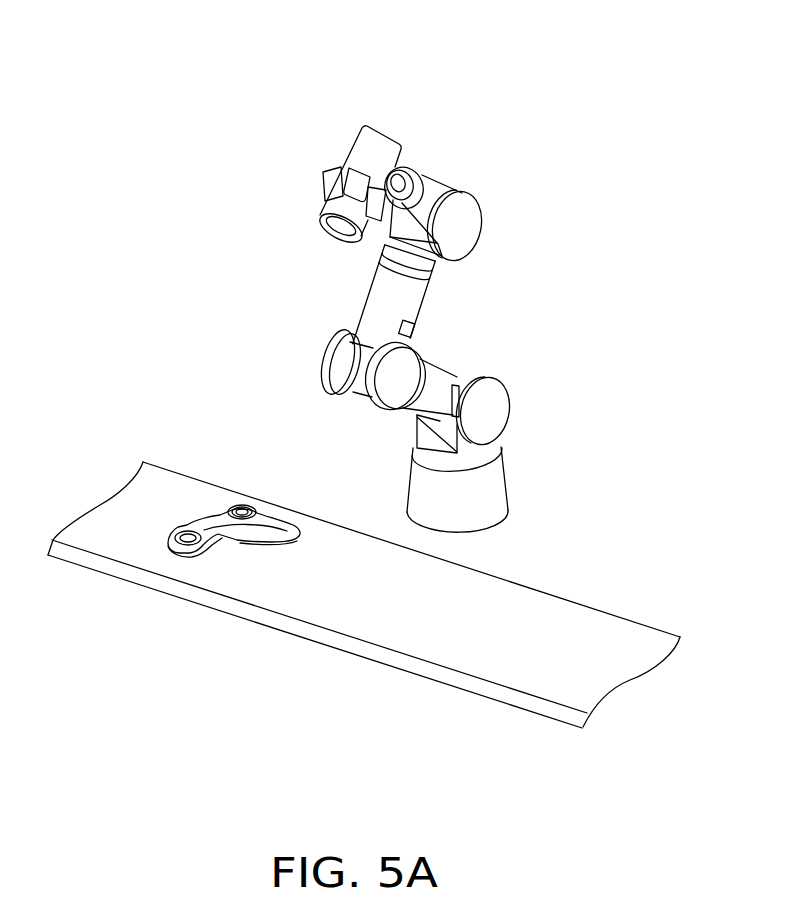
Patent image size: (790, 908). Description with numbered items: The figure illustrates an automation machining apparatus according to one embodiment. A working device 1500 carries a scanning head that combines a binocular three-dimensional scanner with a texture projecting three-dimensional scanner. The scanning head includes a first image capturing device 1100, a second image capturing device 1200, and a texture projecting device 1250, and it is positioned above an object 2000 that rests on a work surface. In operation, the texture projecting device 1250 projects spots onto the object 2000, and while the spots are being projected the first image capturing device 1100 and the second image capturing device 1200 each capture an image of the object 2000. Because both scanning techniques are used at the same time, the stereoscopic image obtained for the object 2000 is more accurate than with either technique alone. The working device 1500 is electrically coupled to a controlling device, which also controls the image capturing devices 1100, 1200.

The first image capturing device 1100 is at (328, 174).
The second image capturing device 1200 is at (360, 176).
The texture projecting device 1250 is at (420, 174).
The working device 1500 is at (430, 299).
The object 2000 is at (237, 518).